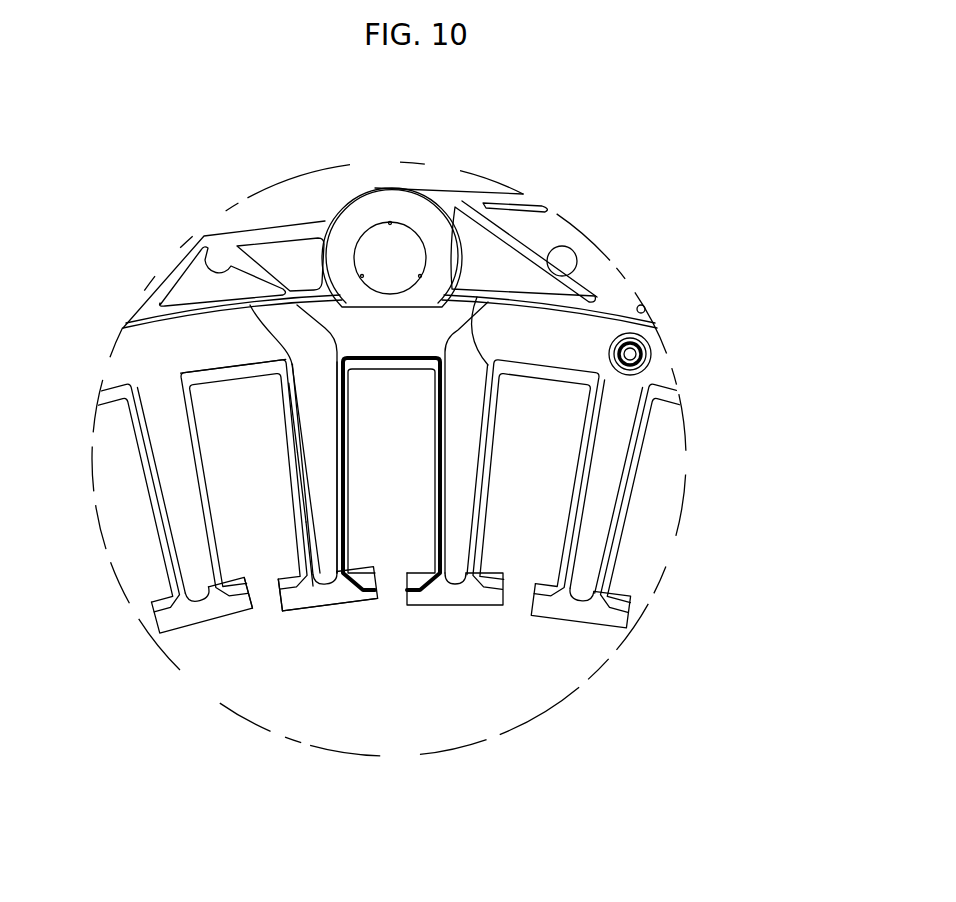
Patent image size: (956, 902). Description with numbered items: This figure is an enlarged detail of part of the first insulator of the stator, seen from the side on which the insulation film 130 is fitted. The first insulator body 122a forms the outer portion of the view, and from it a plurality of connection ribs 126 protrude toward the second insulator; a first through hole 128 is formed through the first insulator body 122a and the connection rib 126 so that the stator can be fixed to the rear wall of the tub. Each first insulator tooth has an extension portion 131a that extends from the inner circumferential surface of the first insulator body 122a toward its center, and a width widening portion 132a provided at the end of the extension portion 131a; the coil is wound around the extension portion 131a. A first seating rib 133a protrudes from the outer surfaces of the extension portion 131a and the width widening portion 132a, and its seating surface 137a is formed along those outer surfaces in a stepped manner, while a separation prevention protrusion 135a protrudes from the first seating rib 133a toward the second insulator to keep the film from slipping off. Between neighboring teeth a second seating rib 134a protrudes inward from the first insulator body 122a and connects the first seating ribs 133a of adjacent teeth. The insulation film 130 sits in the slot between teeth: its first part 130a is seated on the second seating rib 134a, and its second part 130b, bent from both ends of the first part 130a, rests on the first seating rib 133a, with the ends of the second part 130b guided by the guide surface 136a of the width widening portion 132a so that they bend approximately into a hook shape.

The connection rib 126 is at (355, 222).
The first through hole 128 is at (406, 250).
The first insulator body 122a is at (275, 253).
The extension portion 131a is at (305, 392).
The second seating rib 134a is at (213, 380).
The insulation film 130 is at (684, 252).
The first part 130a is at (423, 356).
The second part 130b is at (440, 444).
The first seating rib 133a is at (285, 457).
The seating surface 137a is at (297, 523).
The separation prevention protrusion 135a is at (283, 585).
The guide surface 136a is at (232, 588).
The width widening portion 132a is at (328, 598).